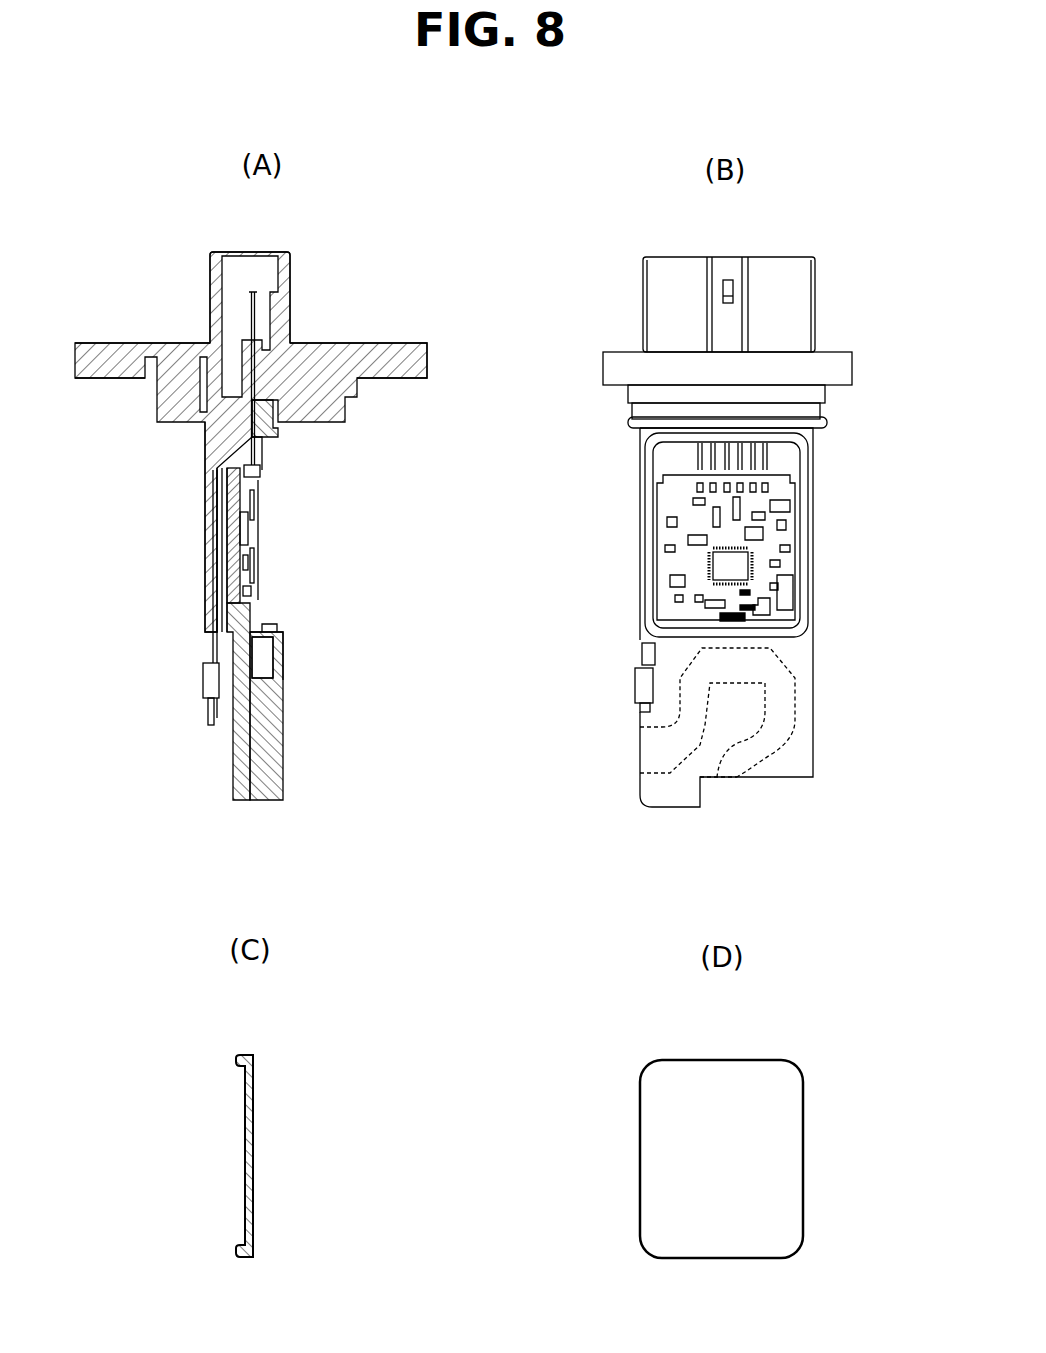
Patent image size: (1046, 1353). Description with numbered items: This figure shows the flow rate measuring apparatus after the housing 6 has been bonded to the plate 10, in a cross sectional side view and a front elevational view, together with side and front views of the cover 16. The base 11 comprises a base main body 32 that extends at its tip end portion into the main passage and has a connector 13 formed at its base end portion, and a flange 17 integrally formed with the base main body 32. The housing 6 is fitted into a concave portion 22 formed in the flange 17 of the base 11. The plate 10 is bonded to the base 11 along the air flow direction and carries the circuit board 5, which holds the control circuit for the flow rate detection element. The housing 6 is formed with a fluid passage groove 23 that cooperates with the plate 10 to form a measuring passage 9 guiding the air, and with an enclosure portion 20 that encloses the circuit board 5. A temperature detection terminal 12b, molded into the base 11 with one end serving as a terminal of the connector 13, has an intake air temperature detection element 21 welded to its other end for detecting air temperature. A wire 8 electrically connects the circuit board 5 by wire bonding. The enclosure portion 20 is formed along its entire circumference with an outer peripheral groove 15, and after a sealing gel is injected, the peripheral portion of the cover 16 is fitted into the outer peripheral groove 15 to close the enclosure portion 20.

The circuit board 5 is at (245, 500).
The housing 6 is at (268, 762).
The wire 8 is at (258, 470).
The measuring passage 9 is at (262, 667).
The plate 10 is at (233, 760).
The base 11 is at (125, 378).
The temperature detection terminal 12b is at (208, 590).
The connector 13 is at (215, 292).
The outer peripheral groove 15 is at (800, 455).
The cover 16 is at (250, 1128).
The flange 17 is at (392, 352).
The enclosure portion 20 is at (260, 580).
The intake air temperature detection element 21 is at (203, 678).
The concave portion 22 is at (272, 425).
The fluid passage groove 23 is at (258, 640).
The base main body 32 is at (208, 560).